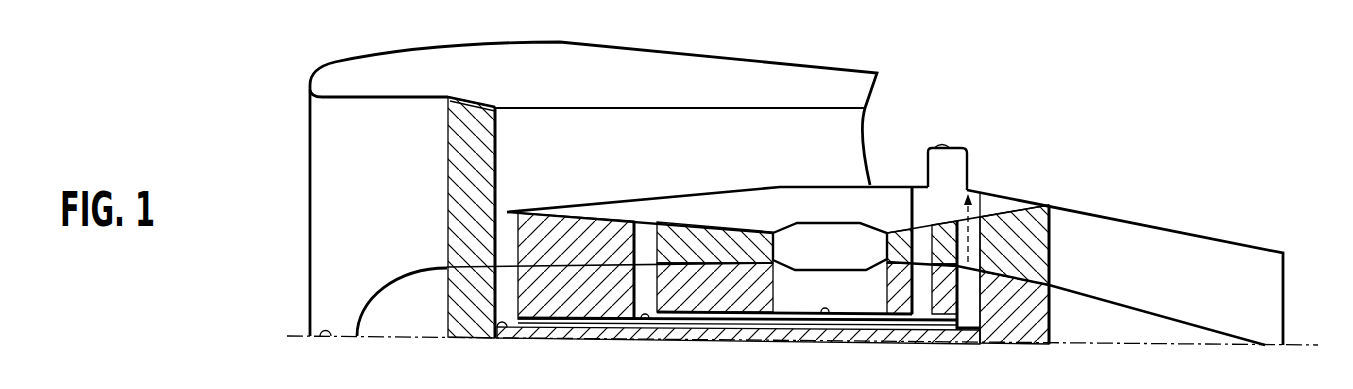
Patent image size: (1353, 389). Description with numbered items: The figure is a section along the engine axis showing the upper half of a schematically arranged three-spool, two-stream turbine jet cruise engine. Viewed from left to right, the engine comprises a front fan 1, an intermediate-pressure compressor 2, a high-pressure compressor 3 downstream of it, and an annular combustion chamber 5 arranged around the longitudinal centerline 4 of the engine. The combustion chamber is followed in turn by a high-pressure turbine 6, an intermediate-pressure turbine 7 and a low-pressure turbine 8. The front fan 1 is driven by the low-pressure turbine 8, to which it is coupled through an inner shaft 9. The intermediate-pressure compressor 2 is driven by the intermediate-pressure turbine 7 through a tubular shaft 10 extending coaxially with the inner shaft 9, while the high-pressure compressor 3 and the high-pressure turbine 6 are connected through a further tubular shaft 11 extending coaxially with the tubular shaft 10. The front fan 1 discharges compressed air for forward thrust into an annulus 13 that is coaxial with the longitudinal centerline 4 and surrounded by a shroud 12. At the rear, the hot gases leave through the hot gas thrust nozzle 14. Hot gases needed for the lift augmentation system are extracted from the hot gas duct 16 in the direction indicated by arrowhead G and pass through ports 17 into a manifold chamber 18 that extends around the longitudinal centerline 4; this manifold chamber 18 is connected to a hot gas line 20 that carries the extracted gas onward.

The front fan 1 is at (485, 174).
The intermediate-pressure compressor 2 is at (562, 221).
The high-pressure compressor 3 is at (692, 242).
The longitudinal centerline 4 is at (322, 335).
The annular combustion chamber 5 is at (808, 230).
The high-pressure turbine 6 is at (899, 243).
The intermediate-pressure turbine 7 is at (941, 240).
The low-pressure turbine 8 is at (1028, 254).
The inner shaft 9 is at (501, 329).
The tubular shaft 10 is at (645, 320).
The further tubular shaft 11 is at (825, 314).
The shroud 12 is at (617, 68).
The annulus 13 is at (665, 139).
The hot gas thrust nozzle 14 is at (1285, 312).
The hot gas duct 16 is at (1000, 270).
The ports 17 is at (985, 236).
The manifold chamber 18 is at (953, 196).
The hot gas line 20 is at (928, 157).
The arrowhead G is at (974, 200).